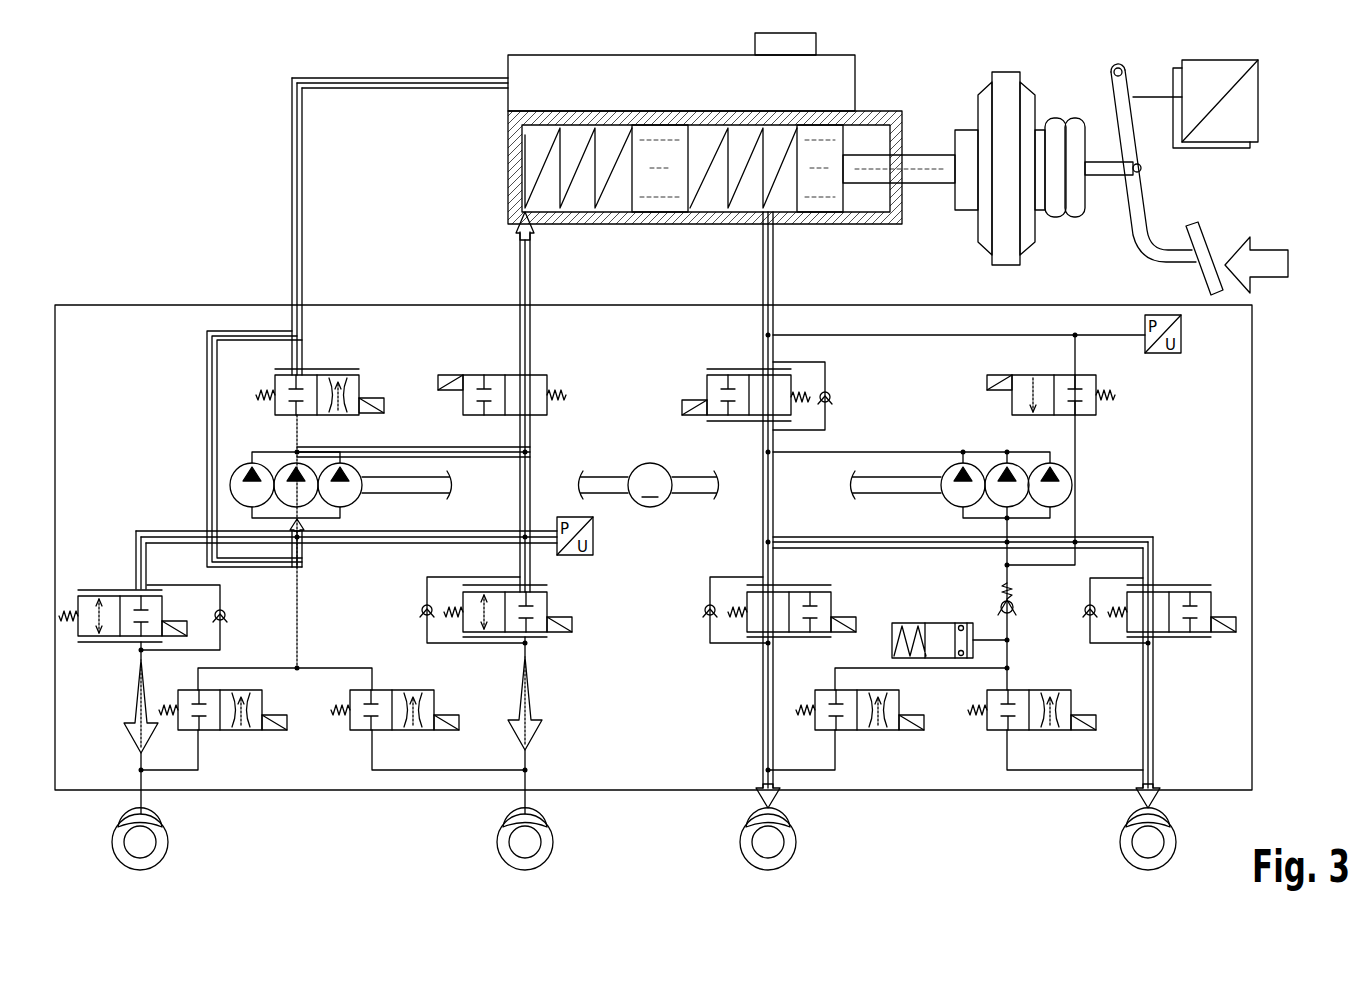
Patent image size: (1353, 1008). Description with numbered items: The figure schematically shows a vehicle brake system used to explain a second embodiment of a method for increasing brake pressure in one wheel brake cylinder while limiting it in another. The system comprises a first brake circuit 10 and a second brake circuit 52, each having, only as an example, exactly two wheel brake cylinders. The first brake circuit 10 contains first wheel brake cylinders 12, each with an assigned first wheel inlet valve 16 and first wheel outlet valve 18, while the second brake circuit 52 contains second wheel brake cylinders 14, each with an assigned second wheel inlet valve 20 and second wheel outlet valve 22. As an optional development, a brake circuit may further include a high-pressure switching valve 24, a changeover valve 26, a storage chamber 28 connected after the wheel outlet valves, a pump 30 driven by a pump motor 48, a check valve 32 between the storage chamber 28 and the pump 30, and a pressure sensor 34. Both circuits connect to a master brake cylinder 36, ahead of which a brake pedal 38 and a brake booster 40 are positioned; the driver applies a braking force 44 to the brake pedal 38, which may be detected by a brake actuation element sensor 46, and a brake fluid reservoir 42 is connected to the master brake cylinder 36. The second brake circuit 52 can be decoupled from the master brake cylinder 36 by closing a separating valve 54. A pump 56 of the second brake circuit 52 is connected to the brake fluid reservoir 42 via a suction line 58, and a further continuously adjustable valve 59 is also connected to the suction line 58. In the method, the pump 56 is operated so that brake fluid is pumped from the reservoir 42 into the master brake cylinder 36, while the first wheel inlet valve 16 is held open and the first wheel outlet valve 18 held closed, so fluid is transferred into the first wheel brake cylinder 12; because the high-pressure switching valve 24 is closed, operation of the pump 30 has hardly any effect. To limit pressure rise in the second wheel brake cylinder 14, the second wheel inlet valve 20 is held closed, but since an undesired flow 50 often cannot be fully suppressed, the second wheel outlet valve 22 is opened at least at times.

The first brake circuit 10 is at (962, 816).
The first wheel brake cylinder 12 is at (780, 820).
The second wheel brake cylinder 14 is at (150, 820).
The first wheel inlet valve 16 is at (832, 598).
The first wheel outlet valve 18 is at (860, 732).
The second wheel inlet valve 20 is at (90, 645).
The second wheel outlet valve 22 is at (250, 732).
The high-pressure switching valve 24 is at (1012, 407).
The changeover valve 26 is at (808, 362).
The storage chamber 28 is at (922, 623).
The pump 30 is at (945, 500).
The check valve 32 is at (999, 601).
The pressure sensor 34 is at (594, 537).
The master brake cylinder 36 is at (860, 222).
The brake pedal 38 is at (1142, 193).
The brake booster 40 is at (1005, 203).
The brake fluid reservoir 42 is at (830, 82).
The driver's braking force 44 is at (1266, 252).
The brake actuation element sensor 46 is at (1258, 100).
The pump motor 48 is at (647, 464).
The undesired flow 50 is at (126, 712).
The second brake circuit 52 is at (292, 815).
The separating valve 54 is at (548, 380).
The pump 56 is at (246, 464).
The suction line 58 is at (265, 330).
The continuously adjustable valve 59 is at (275, 381).